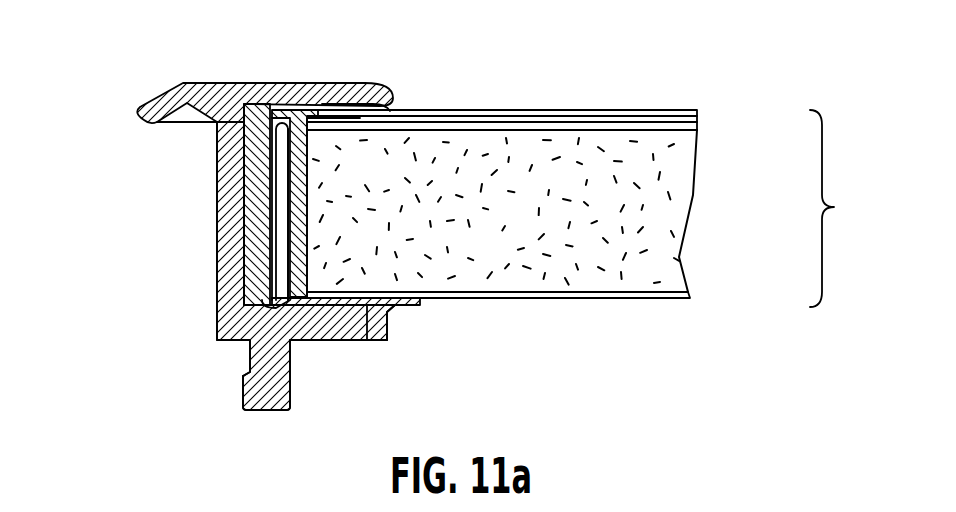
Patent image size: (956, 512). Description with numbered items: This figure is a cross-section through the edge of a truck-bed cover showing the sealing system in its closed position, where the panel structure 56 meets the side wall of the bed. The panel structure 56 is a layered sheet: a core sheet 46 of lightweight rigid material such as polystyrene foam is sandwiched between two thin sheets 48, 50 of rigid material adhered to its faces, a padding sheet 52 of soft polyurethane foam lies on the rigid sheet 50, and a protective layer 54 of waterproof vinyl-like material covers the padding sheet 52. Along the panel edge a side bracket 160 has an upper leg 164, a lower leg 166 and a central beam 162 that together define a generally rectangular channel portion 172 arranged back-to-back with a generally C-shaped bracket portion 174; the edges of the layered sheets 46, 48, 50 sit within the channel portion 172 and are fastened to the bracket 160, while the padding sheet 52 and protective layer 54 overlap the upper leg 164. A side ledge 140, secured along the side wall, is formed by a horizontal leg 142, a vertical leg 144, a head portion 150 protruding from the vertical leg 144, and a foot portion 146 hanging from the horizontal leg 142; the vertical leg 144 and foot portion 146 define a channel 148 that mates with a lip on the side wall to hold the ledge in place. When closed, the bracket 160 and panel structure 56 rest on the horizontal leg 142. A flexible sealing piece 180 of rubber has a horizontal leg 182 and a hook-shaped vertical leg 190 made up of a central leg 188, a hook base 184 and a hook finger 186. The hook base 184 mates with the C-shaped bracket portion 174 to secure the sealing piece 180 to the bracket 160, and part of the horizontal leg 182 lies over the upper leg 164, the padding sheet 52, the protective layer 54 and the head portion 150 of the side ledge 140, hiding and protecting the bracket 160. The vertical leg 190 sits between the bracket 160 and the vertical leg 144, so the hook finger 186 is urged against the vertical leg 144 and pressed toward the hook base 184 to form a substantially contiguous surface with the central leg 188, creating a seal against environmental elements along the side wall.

The sheet of lightweight rigid material 46 is at (656, 216).
The thin sheet of rigid material 48 is at (690, 296).
The thin sheet of rigid material 50 is at (702, 127).
The padding sheet 52 is at (702, 117).
The protective layer 54 is at (702, 110).
The panel structure 56 is at (846, 208).
The side ledge 140 is at (228, 330).
The horizontal leg 142 is at (362, 342).
The vertical leg 144 is at (228, 290).
The foot portion 146 is at (268, 403).
The channel 148 is at (238, 357).
The head portion 150 is at (160, 126).
The side bracket 160 is at (397, 313).
The central beam 162 is at (308, 176).
The upper leg 164 is at (360, 119).
The lower leg 166 is at (423, 307).
The channel portion 172 is at (310, 219).
The C-shaped bracket portion 174 is at (287, 241).
The sealing piece 180 is at (372, 84).
The horizontal leg 182 is at (300, 82).
The hook base 184 is at (262, 174).
The hook finger 186 is at (275, 192).
The central leg 188 is at (250, 83).
The vertical leg 190 is at (230, 207).